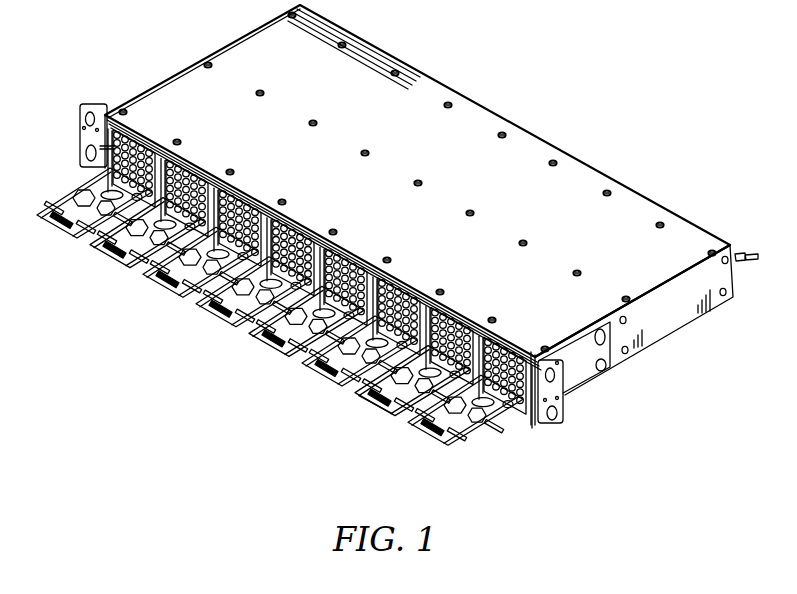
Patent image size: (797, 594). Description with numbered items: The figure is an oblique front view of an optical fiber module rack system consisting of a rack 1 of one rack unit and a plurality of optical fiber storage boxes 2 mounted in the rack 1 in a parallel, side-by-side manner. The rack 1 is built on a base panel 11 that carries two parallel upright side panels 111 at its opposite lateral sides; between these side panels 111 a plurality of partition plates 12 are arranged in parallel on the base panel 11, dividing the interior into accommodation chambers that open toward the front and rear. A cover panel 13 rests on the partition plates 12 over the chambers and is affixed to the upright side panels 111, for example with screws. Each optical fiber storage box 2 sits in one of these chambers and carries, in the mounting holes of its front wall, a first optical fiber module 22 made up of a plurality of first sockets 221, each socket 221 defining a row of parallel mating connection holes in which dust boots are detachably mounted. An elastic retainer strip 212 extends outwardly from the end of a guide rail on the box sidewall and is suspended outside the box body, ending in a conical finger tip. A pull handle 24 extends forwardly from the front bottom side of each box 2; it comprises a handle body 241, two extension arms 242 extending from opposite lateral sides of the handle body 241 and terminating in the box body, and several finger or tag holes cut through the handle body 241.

The rack 1 is at (419, 254).
The base panel 11 is at (419, 303).
The upright side panel 111 is at (655, 335).
The partition plate 12 is at (545, 412).
The cover panel 13 is at (637, 203).
The optical fiber storage box 2 is at (597, 415).
The first optical fiber module 22 is at (560, 395).
The first socket 221 is at (563, 345).
The elastic retainer strip 212 is at (508, 408).
The pull handle 24 is at (436, 434).
The handle body 241 is at (475, 435).
The extension arm 242 is at (360, 393).